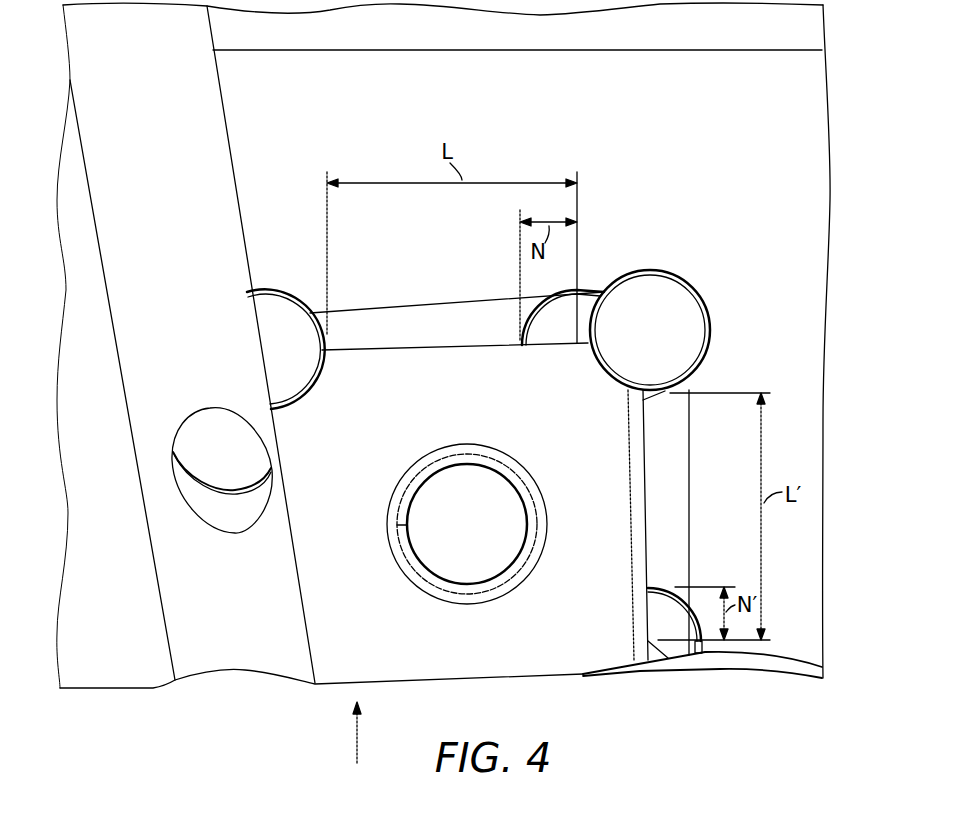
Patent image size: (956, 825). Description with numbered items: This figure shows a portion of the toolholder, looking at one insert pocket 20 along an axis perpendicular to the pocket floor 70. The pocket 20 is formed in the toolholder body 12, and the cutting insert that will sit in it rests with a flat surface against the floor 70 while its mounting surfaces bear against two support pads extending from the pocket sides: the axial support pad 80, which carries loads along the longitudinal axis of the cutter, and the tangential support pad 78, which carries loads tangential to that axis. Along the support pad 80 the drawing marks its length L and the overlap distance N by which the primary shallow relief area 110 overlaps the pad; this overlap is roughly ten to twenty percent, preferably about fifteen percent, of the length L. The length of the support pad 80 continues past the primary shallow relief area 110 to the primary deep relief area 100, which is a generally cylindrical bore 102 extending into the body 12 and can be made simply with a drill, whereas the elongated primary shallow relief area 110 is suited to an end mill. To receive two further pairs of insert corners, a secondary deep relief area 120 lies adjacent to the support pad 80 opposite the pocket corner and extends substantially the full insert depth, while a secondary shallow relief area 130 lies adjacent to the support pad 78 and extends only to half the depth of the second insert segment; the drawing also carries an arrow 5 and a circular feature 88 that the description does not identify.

The section view direction arrow 5 is at (358, 736).
The body 12 is at (702, 137).
The pocket 20 is at (589, 662).
The floor 70 is at (541, 659).
The support pad 78 is at (636, 443).
The support pad 80 is at (472, 347).
The circular opening 88 is at (436, 556).
The primary deep relief area 100 is at (660, 296).
The cylindrical bore 102 is at (690, 318).
The primary shallow relief area 110 is at (583, 302).
The secondary deep relief area 120 is at (267, 332).
The secondary shallow relief area 130 is at (646, 612).